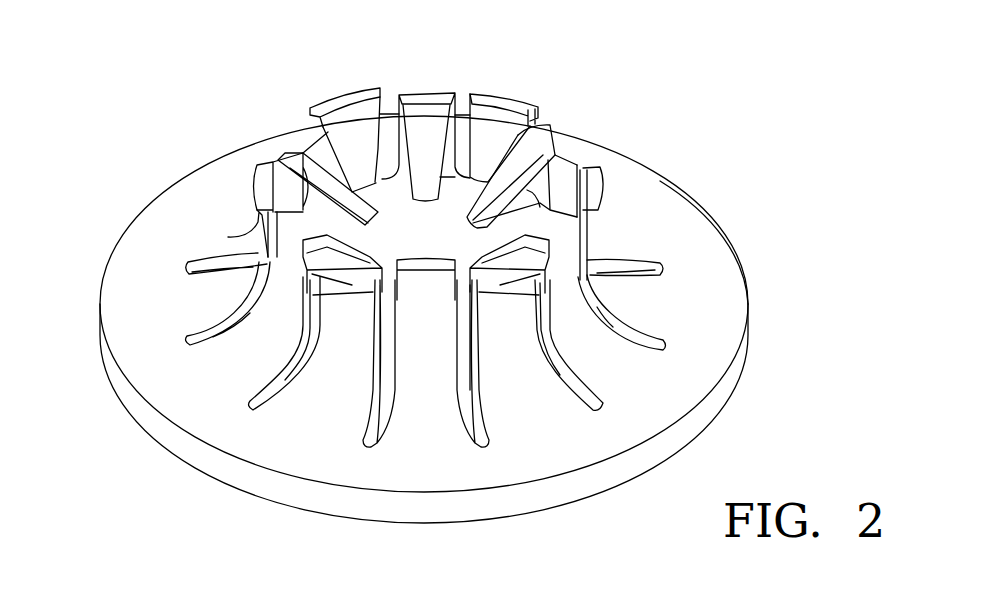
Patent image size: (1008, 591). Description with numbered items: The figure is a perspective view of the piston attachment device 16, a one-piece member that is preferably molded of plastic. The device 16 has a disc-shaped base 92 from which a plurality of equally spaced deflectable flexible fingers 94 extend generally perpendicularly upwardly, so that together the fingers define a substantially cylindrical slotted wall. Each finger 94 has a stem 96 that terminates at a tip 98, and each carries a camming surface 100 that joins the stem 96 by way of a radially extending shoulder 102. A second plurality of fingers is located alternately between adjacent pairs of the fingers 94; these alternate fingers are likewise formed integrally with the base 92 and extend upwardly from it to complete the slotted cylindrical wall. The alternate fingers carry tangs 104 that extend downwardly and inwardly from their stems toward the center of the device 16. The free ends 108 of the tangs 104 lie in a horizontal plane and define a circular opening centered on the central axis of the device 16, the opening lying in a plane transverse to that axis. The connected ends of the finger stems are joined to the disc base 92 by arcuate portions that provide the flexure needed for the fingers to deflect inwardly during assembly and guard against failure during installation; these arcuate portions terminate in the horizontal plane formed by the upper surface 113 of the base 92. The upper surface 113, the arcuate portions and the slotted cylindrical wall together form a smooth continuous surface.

The piston attachment device 16 is at (710, 217).
The base 92 is at (705, 413).
The deflectable flexible fingers 94 is at (377, 107).
The stem 96 is at (488, 360).
The tip 98 is at (493, 95).
The camming surface 100 is at (250, 188).
The radially extending shoulder 102 is at (228, 237).
The tangs 104 is at (350, 190).
The free ends of tangs 108 is at (538, 134).
The upper surface of base 113 is at (713, 298).